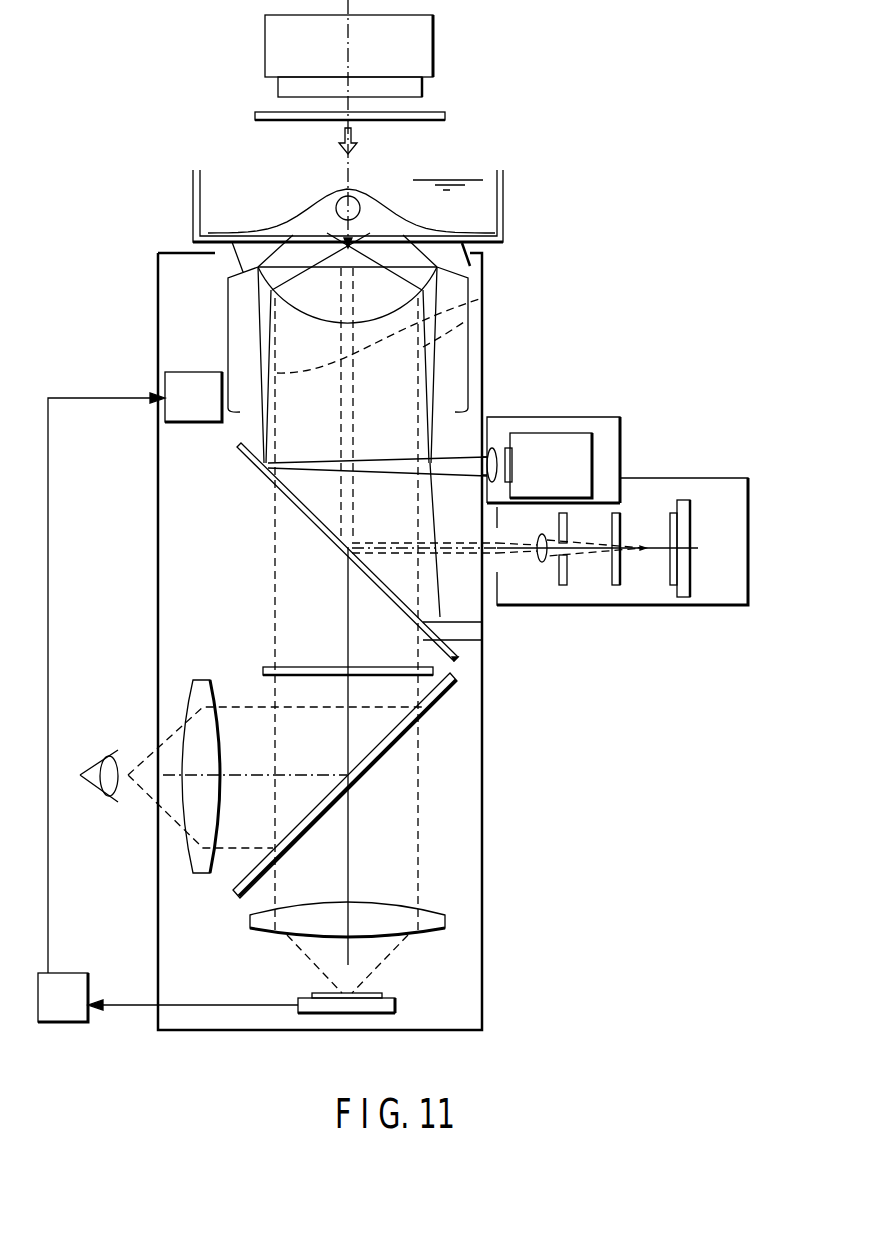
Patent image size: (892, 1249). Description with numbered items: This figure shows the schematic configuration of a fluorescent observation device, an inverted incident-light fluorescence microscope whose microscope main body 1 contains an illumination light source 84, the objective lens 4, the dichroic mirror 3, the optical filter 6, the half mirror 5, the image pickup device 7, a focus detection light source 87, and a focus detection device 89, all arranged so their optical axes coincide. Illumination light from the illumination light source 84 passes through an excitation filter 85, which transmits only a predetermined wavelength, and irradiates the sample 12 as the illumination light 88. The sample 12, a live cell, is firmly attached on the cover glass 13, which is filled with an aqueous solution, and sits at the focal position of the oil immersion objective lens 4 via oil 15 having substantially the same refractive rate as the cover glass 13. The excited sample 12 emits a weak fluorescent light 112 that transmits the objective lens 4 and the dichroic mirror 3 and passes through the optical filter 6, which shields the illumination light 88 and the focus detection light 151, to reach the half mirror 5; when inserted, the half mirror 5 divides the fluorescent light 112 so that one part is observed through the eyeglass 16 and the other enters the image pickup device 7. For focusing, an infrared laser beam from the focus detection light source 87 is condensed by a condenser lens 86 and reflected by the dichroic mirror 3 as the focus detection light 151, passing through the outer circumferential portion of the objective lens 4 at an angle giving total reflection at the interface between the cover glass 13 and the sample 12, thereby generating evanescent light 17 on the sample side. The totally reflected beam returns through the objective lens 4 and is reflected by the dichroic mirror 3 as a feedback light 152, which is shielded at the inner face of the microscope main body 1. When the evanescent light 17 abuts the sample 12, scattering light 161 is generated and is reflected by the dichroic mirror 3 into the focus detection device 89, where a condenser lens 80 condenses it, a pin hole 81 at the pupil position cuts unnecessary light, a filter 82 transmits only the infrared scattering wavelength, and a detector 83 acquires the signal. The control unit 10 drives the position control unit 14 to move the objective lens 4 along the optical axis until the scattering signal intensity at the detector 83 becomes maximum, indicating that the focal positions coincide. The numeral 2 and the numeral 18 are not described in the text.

The microscope main body 1 is at (485, 977).
The light source unit 2 is at (622, 441).
The dichroic mirror 3 is at (262, 478).
The objective lens 4 is at (305, 293).
The half mirror 5 is at (458, 685).
The optical filter 6 is at (312, 665).
The image pickup device 7 is at (378, 1015).
The control unit 10 is at (70, 973).
The sample 12 is at (378, 206).
The cover glass 13 is at (505, 213).
The position control unit 14 is at (187, 424).
The oil 15 is at (233, 255).
The eyeglass 16 is at (187, 866).
The evanescent light 17 is at (337, 236).
The condenser lens 18 is at (445, 916).
The condenser lens 80 is at (542, 565).
The pin hole 81 is at (566, 588).
The filter 82 is at (618, 588).
The detector 83 is at (686, 600).
The illumination light source 84 is at (433, 49).
The excitation filter 85 is at (445, 113).
The condenser lens 86 is at (494, 448).
The focus detection light source 87 is at (560, 433).
The illumination light 88 is at (356, 131).
The focus detection device 89 is at (750, 562).
The fluorescent light 112 is at (483, 299).
The focus detection light 151 is at (262, 367).
The feedback light 152 is at (435, 370).
The scattering light 161 is at (355, 423).